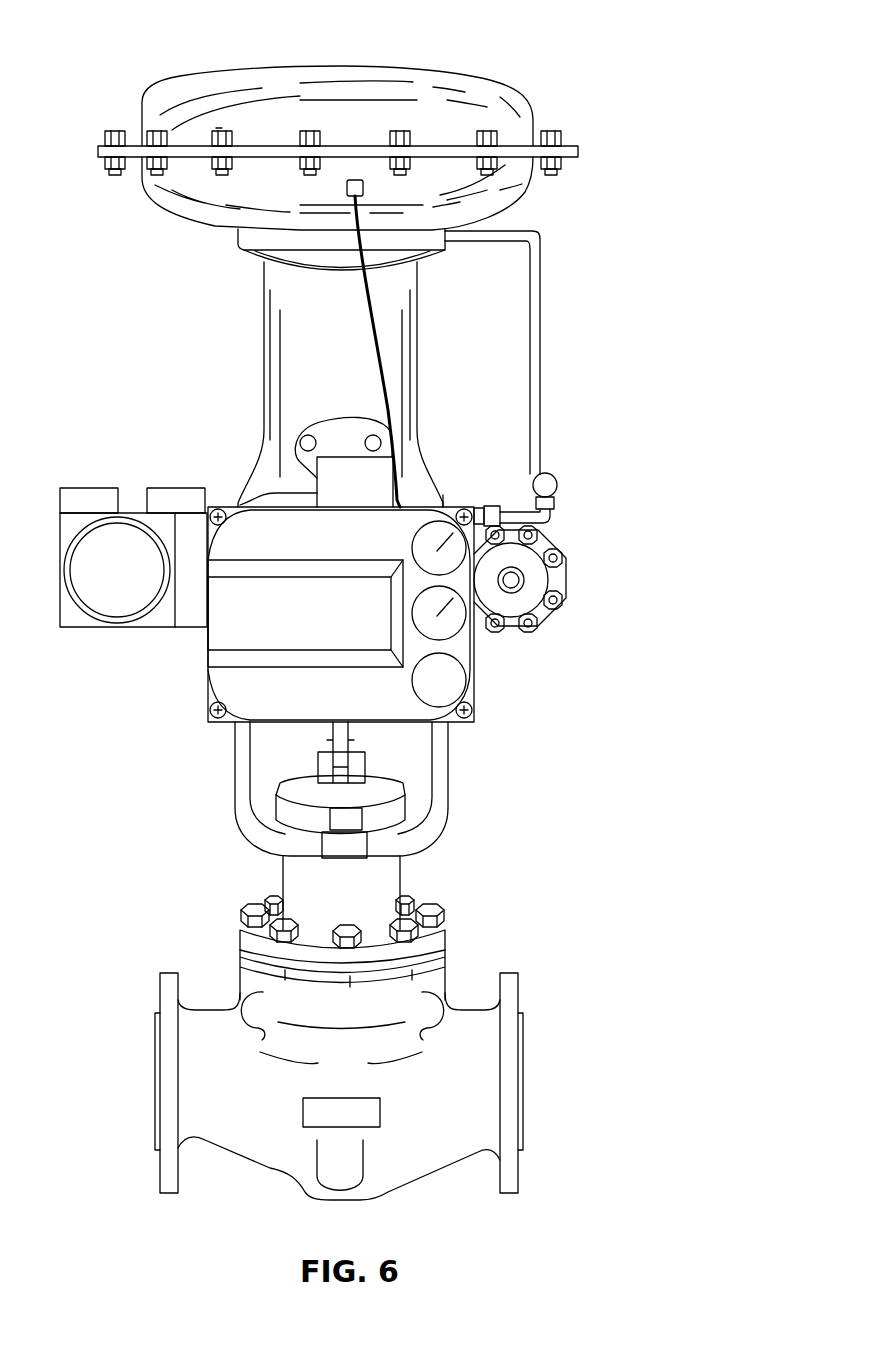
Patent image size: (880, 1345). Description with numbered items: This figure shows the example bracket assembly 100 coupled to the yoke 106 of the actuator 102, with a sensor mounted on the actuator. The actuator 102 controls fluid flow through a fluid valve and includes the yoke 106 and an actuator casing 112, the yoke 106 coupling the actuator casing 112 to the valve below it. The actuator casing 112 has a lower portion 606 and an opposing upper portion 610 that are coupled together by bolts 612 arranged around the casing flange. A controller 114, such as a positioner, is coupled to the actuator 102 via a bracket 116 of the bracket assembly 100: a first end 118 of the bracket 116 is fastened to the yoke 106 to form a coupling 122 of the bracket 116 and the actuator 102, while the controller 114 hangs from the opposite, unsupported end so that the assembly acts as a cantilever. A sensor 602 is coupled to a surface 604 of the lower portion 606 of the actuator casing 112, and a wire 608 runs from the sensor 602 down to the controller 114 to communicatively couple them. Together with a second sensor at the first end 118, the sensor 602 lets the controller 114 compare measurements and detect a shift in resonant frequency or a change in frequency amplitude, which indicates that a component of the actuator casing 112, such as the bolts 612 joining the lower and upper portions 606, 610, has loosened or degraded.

The bracket assembly 100 is at (430, 433).
The actuator 102 is at (143, 45).
The yoke 106 is at (236, 732).
The actuator casing 112 is at (148, 203).
The controller 114 is at (228, 632).
The bracket 116 is at (348, 472).
The first end 118 is at (352, 422).
The coupling 122 is at (250, 437).
The sensor 602 is at (364, 186).
The surface 604 is at (294, 190).
The lower portion 606 is at (145, 165).
The wire 608 is at (378, 340).
The upper portion 610 is at (143, 104).
The bolts 612 is at (219, 130).